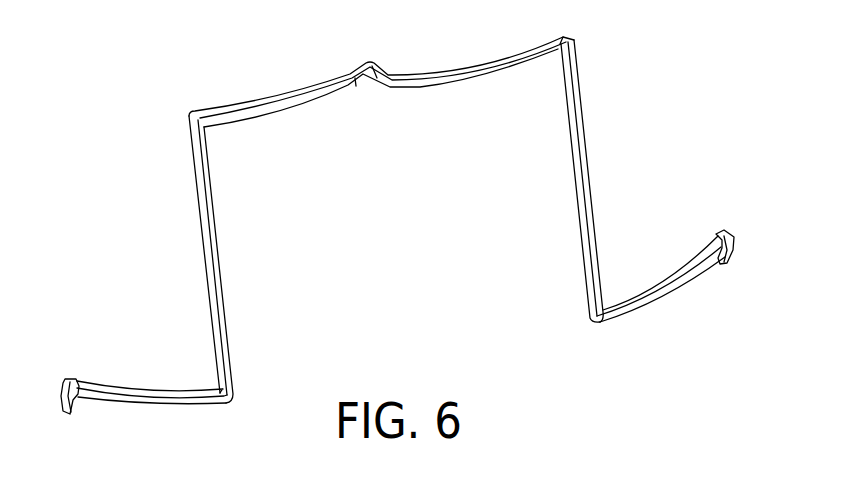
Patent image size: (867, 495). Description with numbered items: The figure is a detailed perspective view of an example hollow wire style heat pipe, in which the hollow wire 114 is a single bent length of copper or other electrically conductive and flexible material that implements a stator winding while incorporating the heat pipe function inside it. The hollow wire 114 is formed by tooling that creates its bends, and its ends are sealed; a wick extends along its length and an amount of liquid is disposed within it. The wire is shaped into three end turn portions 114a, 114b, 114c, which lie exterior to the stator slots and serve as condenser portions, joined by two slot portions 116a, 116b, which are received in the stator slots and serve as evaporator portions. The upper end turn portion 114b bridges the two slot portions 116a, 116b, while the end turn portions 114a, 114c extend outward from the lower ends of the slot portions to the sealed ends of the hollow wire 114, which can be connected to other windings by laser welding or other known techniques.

The hollow wire 114 is at (690, 143).
The end turn portion 114a is at (153, 390).
The end turn portion 114b is at (297, 90).
The end turn portion 114c is at (660, 288).
The slot portion 116a is at (198, 255).
The slot portion 116b is at (580, 142).